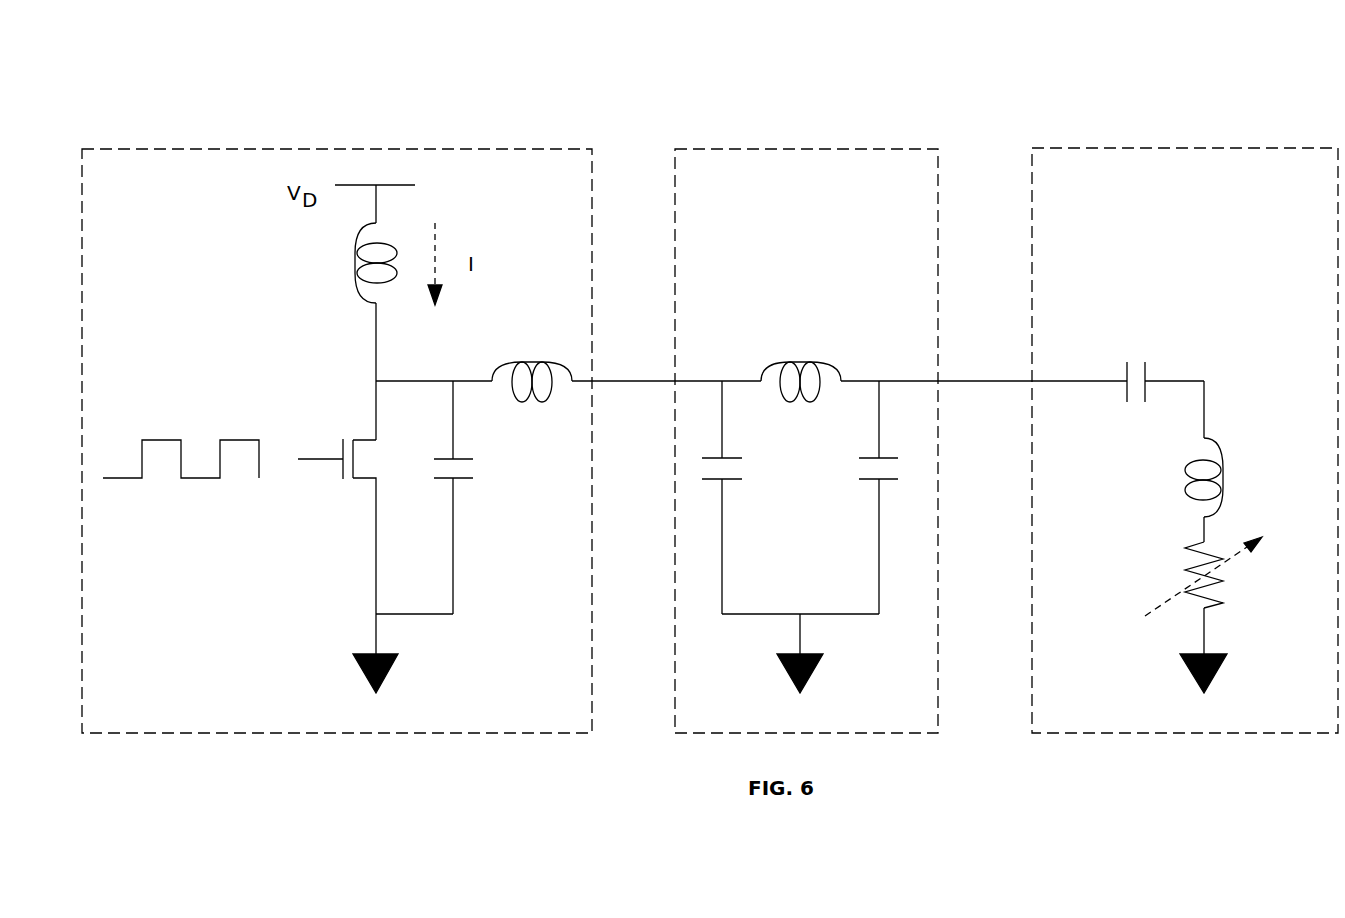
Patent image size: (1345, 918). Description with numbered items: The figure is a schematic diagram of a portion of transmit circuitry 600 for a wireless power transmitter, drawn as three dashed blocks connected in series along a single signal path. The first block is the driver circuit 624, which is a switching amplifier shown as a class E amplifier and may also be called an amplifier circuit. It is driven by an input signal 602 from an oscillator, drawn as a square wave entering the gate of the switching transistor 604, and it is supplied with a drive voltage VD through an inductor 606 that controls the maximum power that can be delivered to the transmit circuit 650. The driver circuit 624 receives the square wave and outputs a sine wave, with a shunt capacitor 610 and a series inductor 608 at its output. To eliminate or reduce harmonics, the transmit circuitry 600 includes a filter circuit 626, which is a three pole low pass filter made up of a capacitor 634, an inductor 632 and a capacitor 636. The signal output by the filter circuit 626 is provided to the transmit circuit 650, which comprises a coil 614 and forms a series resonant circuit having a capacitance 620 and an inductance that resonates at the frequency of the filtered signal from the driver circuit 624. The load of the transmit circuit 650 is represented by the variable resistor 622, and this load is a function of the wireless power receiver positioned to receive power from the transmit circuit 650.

The transmit circuitry 600 is at (263, 103).
The input signal 602 is at (158, 438).
The switching transistor 604 is at (363, 435).
The RF choke inductor 606 is at (357, 247).
The series inductor 608 is at (532, 362).
The shunt capacitor 610 is at (463, 453).
The coil 614 is at (1213, 440).
The capacitance 620 is at (1147, 370).
The variable resistor 622 is at (1198, 543).
The driver circuit 624 is at (450, 148).
The filter circuit 626 is at (865, 148).
The inductor 632 is at (820, 362).
The capacitor 634 is at (730, 457).
The capacitor 636 is at (887, 457).
The transmit circuit 650 is at (1255, 148).